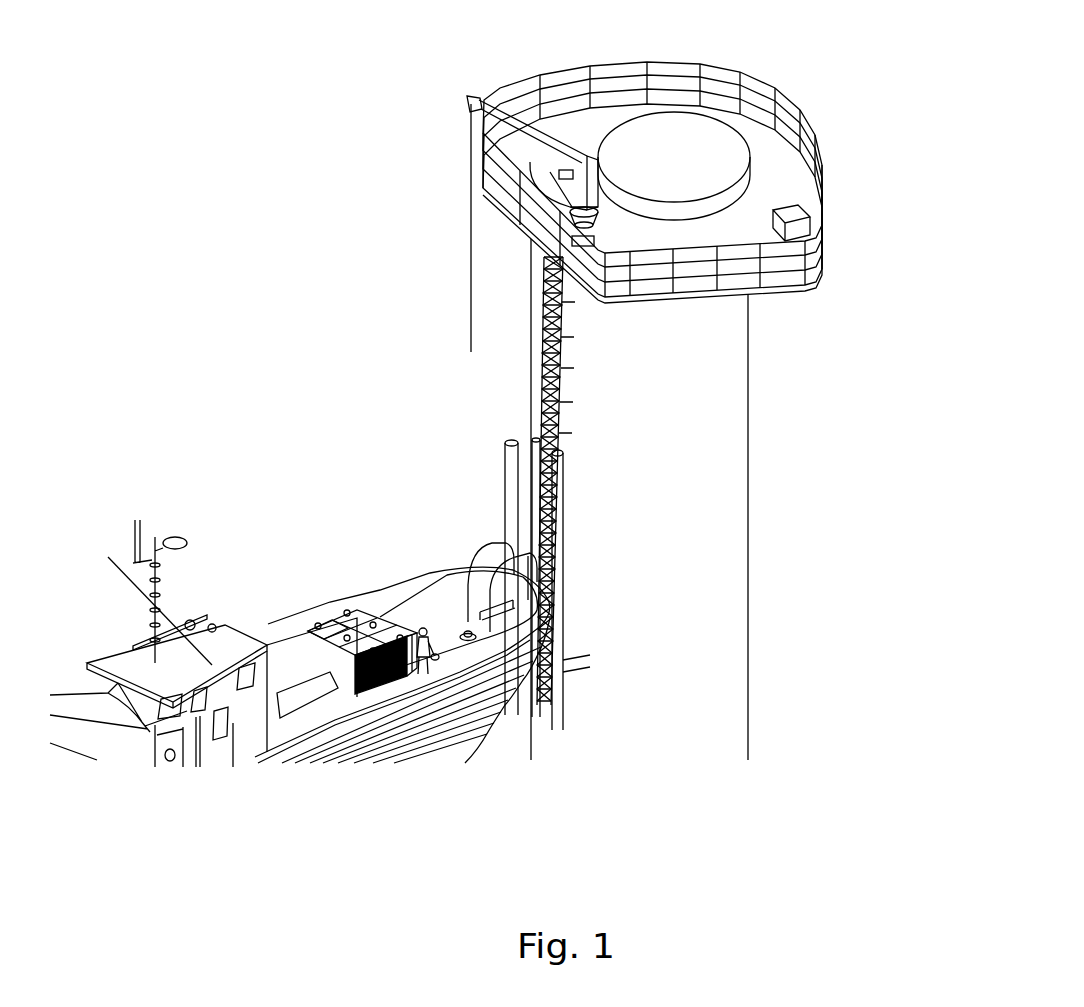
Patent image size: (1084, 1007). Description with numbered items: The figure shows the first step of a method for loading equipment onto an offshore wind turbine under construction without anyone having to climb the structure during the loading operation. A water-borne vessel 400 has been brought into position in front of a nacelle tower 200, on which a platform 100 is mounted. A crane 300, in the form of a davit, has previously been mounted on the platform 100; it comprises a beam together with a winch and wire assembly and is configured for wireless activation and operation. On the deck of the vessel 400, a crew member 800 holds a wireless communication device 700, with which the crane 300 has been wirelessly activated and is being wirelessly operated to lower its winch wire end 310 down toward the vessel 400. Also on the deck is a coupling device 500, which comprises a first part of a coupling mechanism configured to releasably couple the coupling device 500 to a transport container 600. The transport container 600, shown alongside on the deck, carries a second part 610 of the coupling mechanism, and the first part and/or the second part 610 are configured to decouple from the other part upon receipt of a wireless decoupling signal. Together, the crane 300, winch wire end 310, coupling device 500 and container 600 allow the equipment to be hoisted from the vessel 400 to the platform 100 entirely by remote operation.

The platform 100 is at (730, 217).
The nacelle tower 200 is at (707, 437).
The crane 300 is at (540, 147).
The winch wire end 310 is at (471, 352).
The water-borne vessel 400 is at (258, 628).
The coupling device 500 is at (465, 630).
The transport container 600 is at (362, 612).
The second part of coupling mechanism 610 is at (345, 613).
The wireless communication device 700 is at (435, 657).
The crew member 800 is at (432, 660).